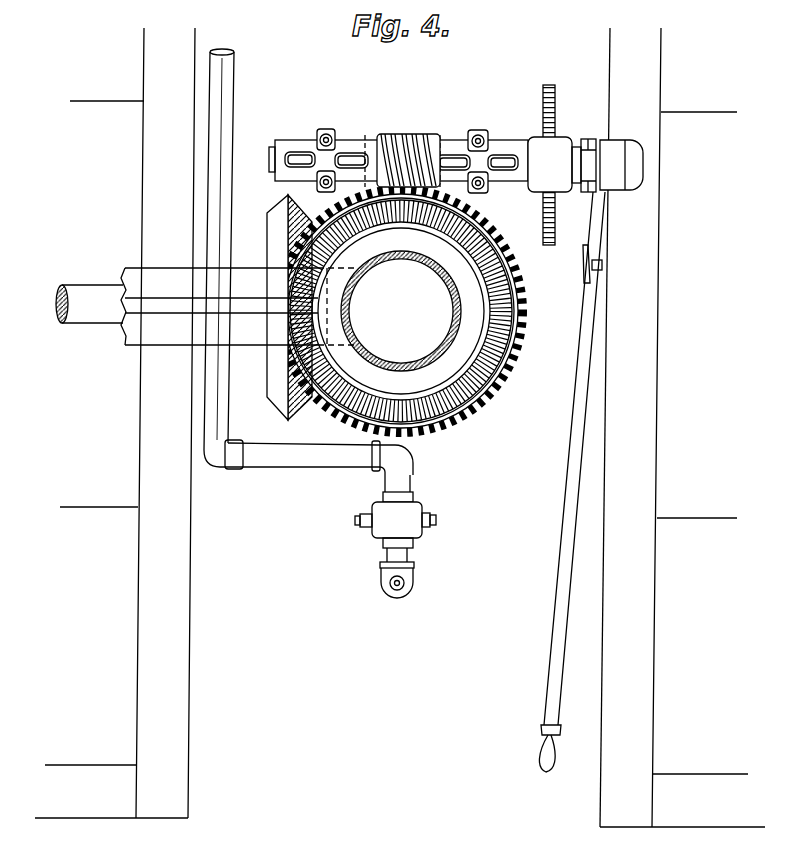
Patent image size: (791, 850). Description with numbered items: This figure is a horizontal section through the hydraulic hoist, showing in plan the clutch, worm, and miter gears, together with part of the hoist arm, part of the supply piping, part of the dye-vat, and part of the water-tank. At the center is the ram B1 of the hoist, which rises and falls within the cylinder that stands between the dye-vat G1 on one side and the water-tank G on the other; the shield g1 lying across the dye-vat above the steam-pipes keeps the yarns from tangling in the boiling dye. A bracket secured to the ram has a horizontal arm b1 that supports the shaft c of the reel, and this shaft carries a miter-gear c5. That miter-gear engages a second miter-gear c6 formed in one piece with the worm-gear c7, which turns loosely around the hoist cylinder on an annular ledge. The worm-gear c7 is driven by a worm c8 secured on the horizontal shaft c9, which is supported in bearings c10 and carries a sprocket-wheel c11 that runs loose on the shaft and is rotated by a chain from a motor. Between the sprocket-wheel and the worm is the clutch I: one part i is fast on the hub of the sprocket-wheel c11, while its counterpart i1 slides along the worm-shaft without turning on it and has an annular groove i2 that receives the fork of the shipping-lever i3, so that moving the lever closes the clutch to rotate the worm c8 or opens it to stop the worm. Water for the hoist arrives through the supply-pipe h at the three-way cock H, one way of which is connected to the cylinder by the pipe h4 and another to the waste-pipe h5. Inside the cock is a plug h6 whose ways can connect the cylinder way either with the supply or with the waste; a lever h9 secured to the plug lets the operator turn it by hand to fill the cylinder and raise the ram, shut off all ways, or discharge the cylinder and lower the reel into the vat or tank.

The dye-vat G1 is at (115, 423).
The shield g1 is at (102, 304).
The water-tank G is at (682, 427).
The clutch I is at (611, 138).
The supply-pipe h is at (233, 84).
The worm-gear c7 is at (523, 291).
The miter-gear c6 is at (433, 228).
The ram B1 is at (458, 295).
The miter-gear c5 is at (285, 307).
The horizontal arm b1 is at (238, 306).
The shaft c is at (99, 287).
The horizontal shaft c9 is at (271, 160).
The bearings c10 is at (285, 141).
The worm c8 is at (391, 139).
The sprocket-wheel c11 is at (556, 117).
The clutch part i is at (554, 157).
The annular groove i2 is at (597, 131).
The clutch counterpart i1 is at (622, 141).
The shipping-lever i3 is at (563, 494).
The pipe h4 is at (412, 443).
The plug h6 is at (424, 505).
The three-way cock H is at (388, 532).
The lever h9 is at (437, 521).
The waste-pipe h5 is at (414, 584).